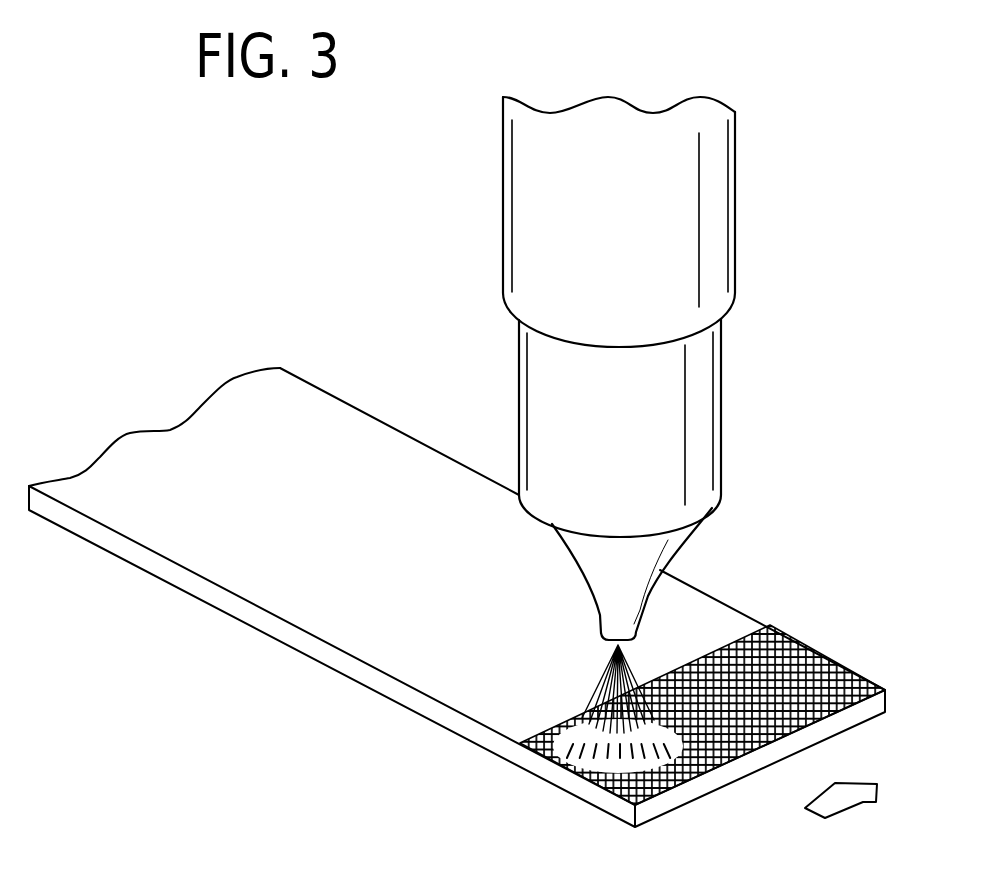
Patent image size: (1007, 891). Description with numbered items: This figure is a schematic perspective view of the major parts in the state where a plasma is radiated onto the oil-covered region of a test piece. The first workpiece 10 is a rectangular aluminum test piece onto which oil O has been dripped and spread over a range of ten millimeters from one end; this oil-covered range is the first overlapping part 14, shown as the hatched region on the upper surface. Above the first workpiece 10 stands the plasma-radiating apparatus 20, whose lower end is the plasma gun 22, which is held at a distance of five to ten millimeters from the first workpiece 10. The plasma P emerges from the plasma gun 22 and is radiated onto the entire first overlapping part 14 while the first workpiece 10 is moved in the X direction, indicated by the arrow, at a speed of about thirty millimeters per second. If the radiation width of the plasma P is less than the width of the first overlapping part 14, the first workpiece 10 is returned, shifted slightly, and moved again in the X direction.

The first workpiece 10 is at (398, 638).
The first overlapping part 14 is at (580, 792).
The plasma-radiating apparatus 20 is at (752, 225).
The plasma gun 22 is at (672, 420).
The plasma P is at (597, 690).
The oil O is at (823, 660).
The X direction X is at (826, 823).